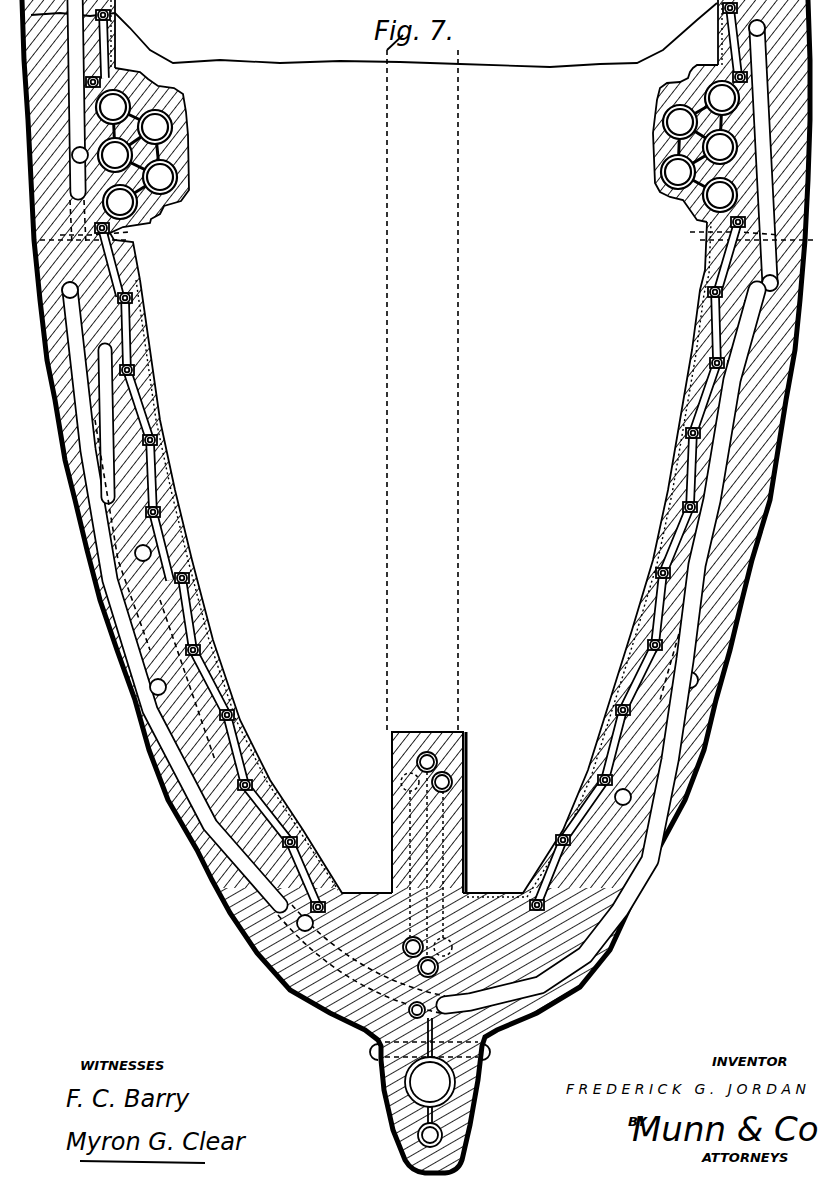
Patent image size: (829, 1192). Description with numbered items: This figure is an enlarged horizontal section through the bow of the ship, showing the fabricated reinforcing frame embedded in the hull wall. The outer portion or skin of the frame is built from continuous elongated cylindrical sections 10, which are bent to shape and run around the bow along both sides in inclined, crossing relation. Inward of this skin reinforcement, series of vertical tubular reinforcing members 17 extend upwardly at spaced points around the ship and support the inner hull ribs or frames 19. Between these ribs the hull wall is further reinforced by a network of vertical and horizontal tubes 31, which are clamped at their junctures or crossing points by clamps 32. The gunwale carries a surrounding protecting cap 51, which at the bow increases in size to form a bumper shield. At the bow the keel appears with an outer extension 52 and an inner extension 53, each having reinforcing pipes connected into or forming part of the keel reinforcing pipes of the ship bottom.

The elongated cylindrical sections 10 is at (100, 395).
The vertical tubular reinforcing members 17 is at (158, 126).
The inner hull ribs or frames 19 is at (176, 149).
The vertical and horizontal tubes 31 is at (200, 612).
The clamps 32 is at (186, 560).
The protecting cap 51 is at (612, 860).
The outer extension of the keel 52 is at (455, 1111).
The inner extension of the keel 53 is at (453, 843).